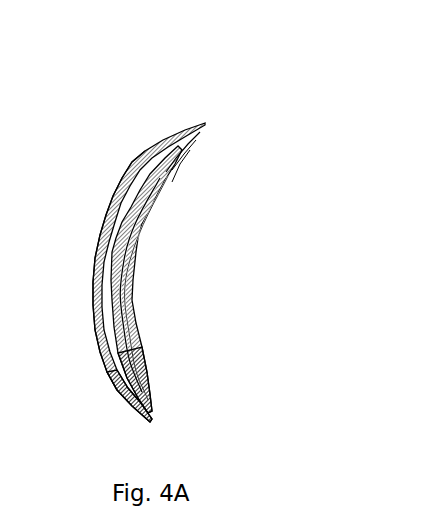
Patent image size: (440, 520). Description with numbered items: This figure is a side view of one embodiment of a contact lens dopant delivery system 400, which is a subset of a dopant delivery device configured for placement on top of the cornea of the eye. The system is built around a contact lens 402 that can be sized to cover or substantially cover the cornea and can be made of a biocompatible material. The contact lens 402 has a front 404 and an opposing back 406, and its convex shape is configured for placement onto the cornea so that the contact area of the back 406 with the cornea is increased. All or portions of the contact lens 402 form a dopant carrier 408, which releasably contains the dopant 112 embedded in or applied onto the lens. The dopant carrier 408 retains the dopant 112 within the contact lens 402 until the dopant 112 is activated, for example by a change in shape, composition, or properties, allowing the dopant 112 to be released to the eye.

The contact lens dopant delivery system 400 is at (193, 217).
The contact lens 402 is at (124, 174).
The front 404 is at (93, 253).
The back 406 is at (164, 202).
The dopant carrier 408 is at (134, 257).
The dopant 112 is at (151, 377).